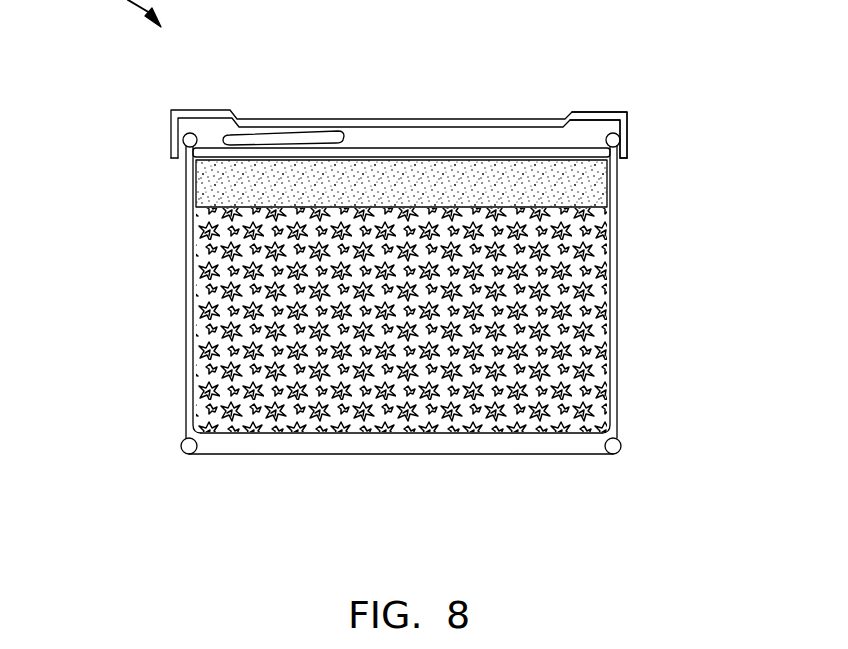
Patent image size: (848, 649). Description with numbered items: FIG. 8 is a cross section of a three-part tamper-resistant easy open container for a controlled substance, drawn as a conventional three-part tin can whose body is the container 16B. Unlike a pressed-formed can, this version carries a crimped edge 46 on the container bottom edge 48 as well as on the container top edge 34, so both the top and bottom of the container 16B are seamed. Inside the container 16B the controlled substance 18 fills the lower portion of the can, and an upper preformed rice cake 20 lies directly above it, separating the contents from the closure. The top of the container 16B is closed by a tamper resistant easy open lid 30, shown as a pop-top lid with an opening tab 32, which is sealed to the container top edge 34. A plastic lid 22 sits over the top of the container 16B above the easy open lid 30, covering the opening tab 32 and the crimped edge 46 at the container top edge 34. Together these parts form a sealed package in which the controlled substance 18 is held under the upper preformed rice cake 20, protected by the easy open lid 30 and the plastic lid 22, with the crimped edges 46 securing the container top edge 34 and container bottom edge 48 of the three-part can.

The container 16B is at (619, 337).
The controlled substance 18 is at (205, 318).
The upper preformed rice cake 20 is at (200, 180).
The plastic lid 22 is at (598, 111).
The tamper resistant easy open lid 30 is at (423, 150).
The opening tab 32 is at (318, 133).
The container top edge 34 is at (623, 117).
The crimped edge 46 is at (619, 133).
The container bottom edge 48 is at (620, 450).